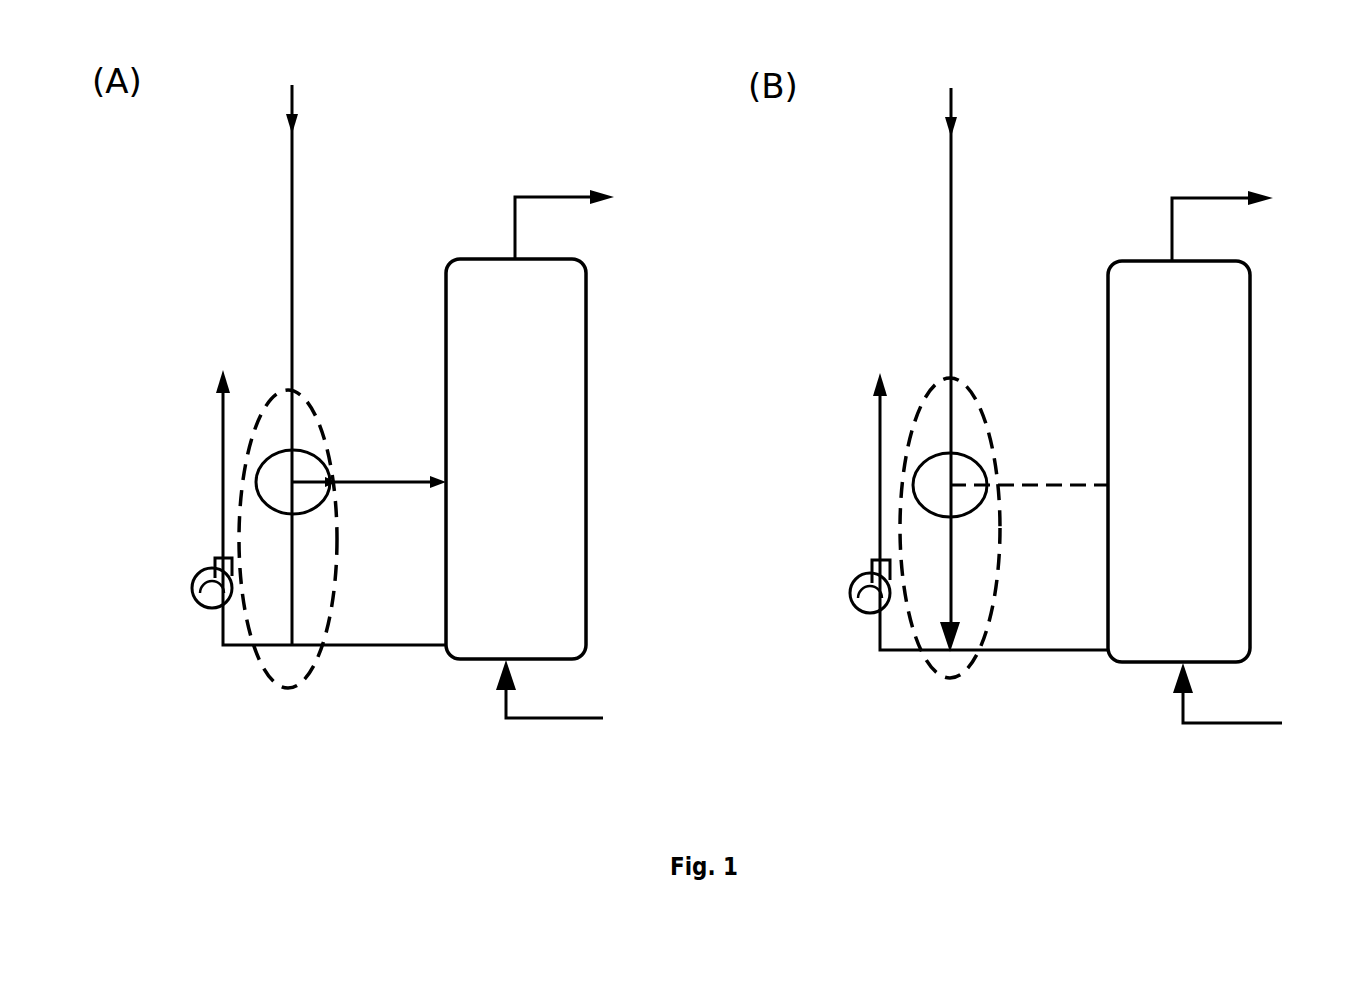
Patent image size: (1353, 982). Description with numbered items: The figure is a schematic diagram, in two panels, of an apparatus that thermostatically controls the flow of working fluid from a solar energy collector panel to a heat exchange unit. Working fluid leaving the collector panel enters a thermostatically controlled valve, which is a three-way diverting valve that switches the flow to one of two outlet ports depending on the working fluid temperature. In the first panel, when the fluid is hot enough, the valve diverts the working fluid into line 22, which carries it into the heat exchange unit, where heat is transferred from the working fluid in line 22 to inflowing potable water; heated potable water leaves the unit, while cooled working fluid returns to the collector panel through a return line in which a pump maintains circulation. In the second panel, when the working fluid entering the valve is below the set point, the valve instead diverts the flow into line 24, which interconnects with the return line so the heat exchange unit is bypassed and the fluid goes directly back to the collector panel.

The line 22 is at (352, 480).
The line 24 is at (945, 578).